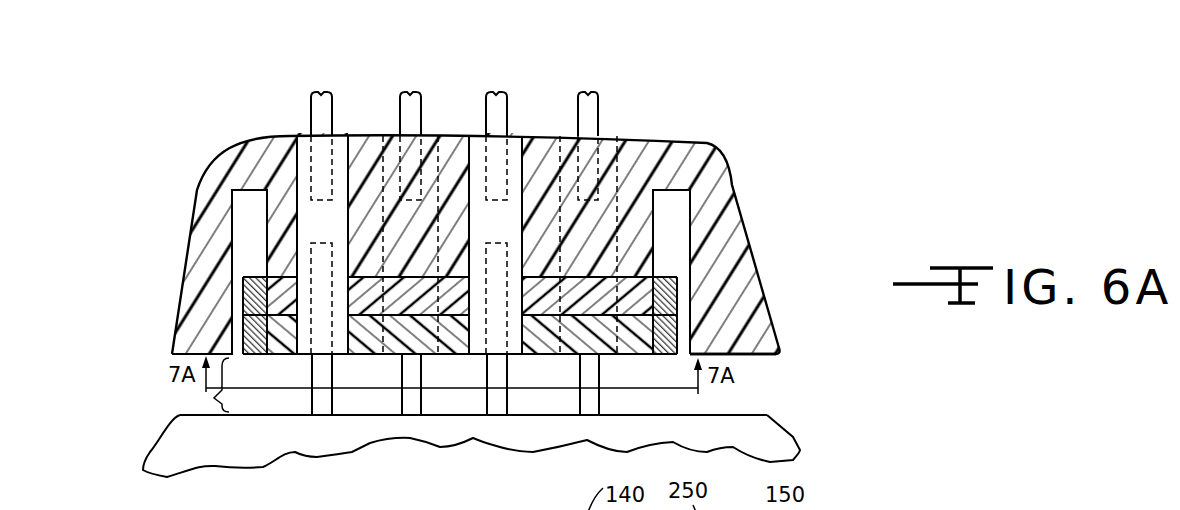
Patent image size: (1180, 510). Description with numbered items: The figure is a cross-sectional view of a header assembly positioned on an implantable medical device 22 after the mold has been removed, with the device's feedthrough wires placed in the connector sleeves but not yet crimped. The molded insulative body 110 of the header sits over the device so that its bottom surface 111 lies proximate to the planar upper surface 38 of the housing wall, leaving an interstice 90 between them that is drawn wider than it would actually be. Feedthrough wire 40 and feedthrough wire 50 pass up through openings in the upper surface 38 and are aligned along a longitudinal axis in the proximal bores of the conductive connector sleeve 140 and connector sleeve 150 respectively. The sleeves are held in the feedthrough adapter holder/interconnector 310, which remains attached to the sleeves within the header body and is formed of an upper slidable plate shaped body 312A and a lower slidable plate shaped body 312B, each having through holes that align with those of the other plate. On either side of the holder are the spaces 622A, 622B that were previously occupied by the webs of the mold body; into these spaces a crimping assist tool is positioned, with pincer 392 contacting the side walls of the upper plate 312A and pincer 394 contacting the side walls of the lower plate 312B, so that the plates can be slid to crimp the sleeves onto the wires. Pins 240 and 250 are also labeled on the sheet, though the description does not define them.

The insulative body 110 is at (763, 223).
The bottom surface of the insulative body 111 is at (763, 356).
The implantable medical device 22 is at (498, 430).
The upper surface 38 is at (727, 415).
The feedthrough wire 40 is at (312, 377).
The feedthrough wire 50 is at (487, 382).
The interstice 90 is at (214, 398).
The connector sleeve 140 is at (357, 136).
The connector sleeve 150 is at (524, 136).
The first pin 240 is at (264, 269).
The second pin 250 is at (472, 268).
The feedthrough adapter holder/interconnector 310 is at (474, 325).
The upper slidable plate shaped body 312A is at (443, 340).
The lower slidable plate shaped body 312B is at (377, 342).
The pincer 392 is at (673, 297).
The pincer 394 is at (673, 331).
The space 622A is at (694, 250).
The space 622B is at (240, 250).